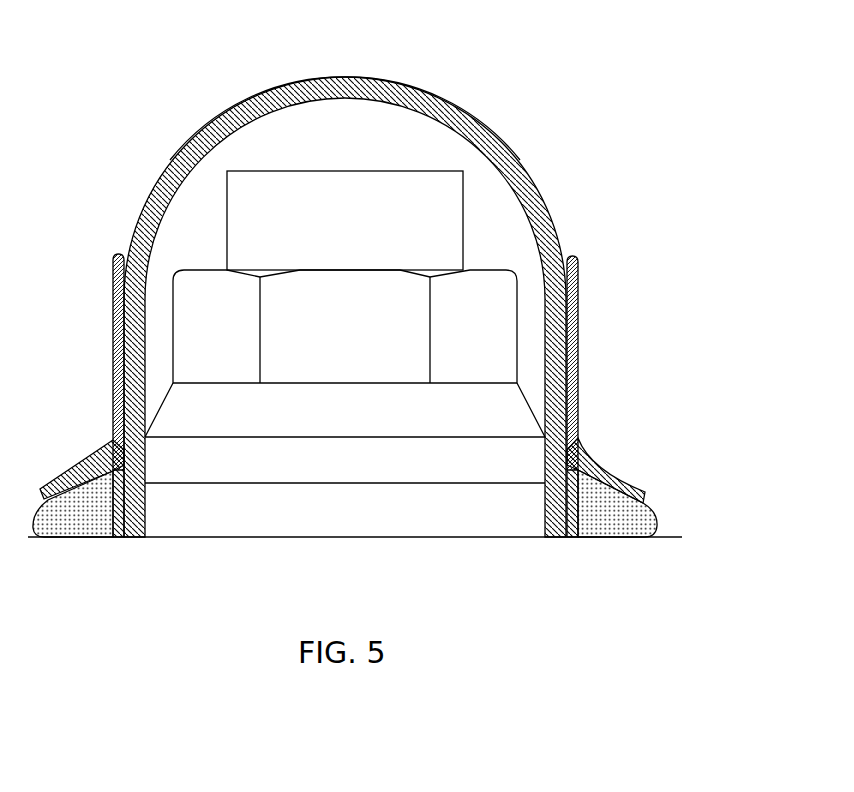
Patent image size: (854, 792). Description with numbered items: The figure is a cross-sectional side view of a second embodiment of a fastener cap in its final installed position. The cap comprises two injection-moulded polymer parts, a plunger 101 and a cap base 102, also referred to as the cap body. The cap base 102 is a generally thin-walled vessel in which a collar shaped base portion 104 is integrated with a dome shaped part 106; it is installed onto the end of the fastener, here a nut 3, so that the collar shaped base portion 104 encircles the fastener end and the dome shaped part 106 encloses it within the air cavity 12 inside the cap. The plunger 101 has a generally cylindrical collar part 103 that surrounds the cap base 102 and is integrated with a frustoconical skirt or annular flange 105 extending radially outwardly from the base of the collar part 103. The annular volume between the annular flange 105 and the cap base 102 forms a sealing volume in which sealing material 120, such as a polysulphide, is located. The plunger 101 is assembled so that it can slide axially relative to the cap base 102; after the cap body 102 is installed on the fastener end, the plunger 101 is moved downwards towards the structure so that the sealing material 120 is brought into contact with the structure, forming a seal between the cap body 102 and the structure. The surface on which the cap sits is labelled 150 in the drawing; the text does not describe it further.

The plunger 101 is at (378, 296).
The cap base 102 is at (395, 78).
The collar part 103 is at (578, 385).
The collar shaped base portion 104 is at (112, 372).
The annular flange 105 is at (630, 480).
The dome shaped part 106 is at (226, 111).
The sealing material 120 is at (597, 524).
The mounting surface 150 is at (672, 537).
The nut 3 is at (515, 462).
The air cavity 12 is at (357, 152).